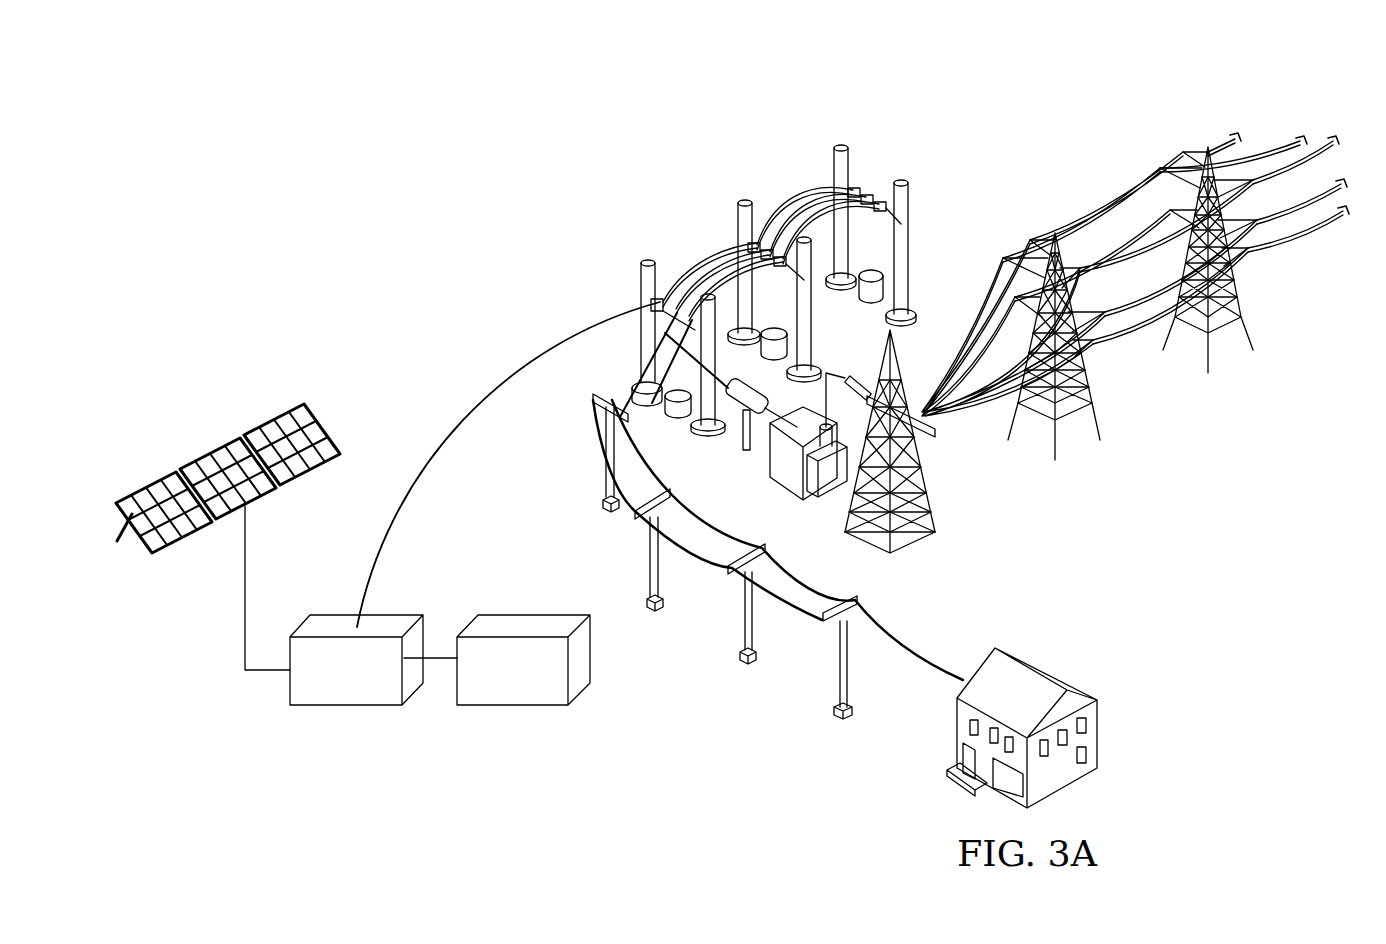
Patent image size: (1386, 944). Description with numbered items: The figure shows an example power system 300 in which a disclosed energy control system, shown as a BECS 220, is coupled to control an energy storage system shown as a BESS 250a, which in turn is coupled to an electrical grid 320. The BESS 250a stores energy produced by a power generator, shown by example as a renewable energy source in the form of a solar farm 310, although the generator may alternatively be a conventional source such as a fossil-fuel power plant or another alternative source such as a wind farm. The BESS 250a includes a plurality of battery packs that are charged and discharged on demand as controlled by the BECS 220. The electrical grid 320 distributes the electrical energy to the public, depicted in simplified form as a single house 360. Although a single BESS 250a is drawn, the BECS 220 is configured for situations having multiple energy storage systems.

The power system 300 is at (429, 132).
The solar farm 310 is at (202, 444).
The electrical grid 320 is at (682, 202).
The BESS 250a is at (345, 707).
The BECS 220 is at (510, 707).
The house 360 is at (1102, 733).